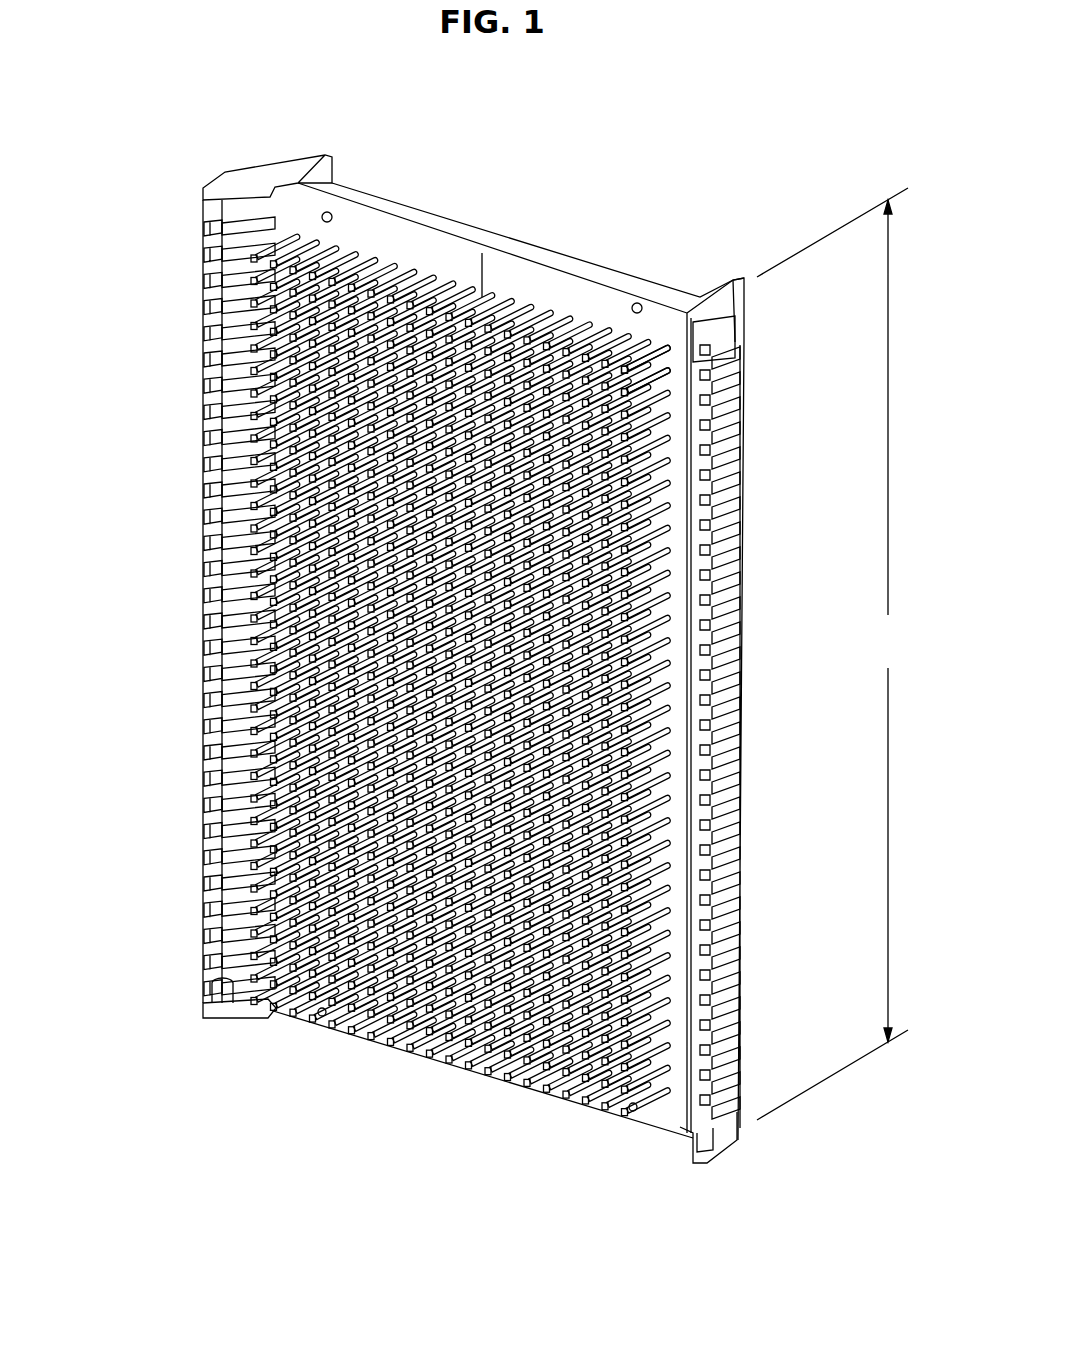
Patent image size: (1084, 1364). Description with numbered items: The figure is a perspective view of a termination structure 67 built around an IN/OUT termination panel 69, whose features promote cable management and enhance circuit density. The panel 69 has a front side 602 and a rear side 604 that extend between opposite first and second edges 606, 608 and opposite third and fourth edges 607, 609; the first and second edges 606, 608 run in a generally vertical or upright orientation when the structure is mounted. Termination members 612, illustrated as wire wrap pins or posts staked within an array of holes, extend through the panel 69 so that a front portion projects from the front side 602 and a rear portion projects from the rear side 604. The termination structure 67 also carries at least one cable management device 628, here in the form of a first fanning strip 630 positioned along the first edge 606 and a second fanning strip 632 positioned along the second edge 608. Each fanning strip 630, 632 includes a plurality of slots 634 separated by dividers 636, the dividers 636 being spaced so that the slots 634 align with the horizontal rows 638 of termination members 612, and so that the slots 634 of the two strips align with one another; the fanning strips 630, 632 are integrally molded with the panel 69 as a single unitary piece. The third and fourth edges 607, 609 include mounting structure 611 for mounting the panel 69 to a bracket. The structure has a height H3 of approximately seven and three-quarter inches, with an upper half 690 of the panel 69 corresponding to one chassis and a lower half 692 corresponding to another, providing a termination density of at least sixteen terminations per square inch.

The termination structure 67 is at (247, 1103).
The IN/OUT termination panel 69 is at (464, 235).
The front side 602 is at (363, 197).
The rear side 604 is at (367, 230).
The first edge 606 is at (265, 775).
The third edge 607 is at (510, 250).
The second edge 608 is at (732, 712).
The fourth edge 609 is at (552, 1098).
The mounting structure 611 is at (329, 212).
The termination members 612 is at (352, 1030).
The cable management device 628 is at (178, 993).
The first fanning strip 630 is at (222, 901).
The second fanning strip 632 is at (735, 942).
The slots 634 is at (218, 385).
The dividers 636 is at (218, 488).
The horizontal rows 638 is at (672, 347).
The upper half 690 is at (770, 578).
The lower half 692 is at (770, 1023).
The height H3 is at (832, 654).